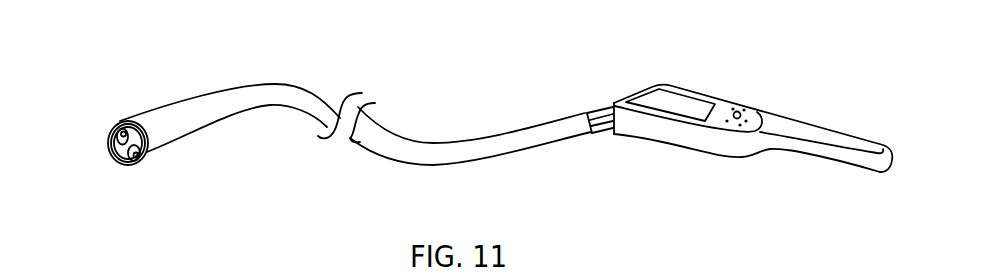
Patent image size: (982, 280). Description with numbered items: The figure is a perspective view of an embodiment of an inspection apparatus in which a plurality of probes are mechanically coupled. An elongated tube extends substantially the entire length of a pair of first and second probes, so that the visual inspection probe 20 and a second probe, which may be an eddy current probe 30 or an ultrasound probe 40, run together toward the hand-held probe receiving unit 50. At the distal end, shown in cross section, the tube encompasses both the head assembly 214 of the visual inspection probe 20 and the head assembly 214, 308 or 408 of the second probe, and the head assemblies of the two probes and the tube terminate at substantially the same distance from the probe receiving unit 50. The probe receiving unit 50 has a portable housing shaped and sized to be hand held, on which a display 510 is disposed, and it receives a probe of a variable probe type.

The head assembly 214 is at (117, 123).
The head assembly 308 is at (192, 168).
The head assembly 408 is at (215, 170).
The visual inspection probe 20 is at (112, 143).
The eddy current probe 30 is at (144, 196).
The ultrasound probe 40 is at (163, 200).
The probe receiving unit 50 is at (682, 146).
The display 510 is at (678, 102).